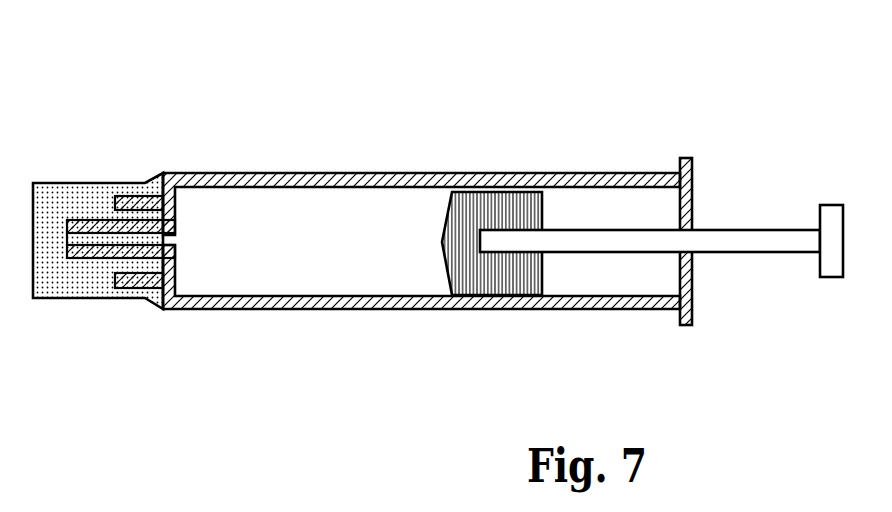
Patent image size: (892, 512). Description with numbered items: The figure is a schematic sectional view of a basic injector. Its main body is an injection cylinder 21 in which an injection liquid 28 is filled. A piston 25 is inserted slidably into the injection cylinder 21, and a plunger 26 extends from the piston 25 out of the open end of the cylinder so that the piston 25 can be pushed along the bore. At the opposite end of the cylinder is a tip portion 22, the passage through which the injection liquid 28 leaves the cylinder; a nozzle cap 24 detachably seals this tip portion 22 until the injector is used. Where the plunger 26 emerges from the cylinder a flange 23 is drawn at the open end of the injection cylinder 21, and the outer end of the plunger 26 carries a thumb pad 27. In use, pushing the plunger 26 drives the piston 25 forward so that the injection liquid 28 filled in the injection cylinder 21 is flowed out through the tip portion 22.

The injection cylinder 21 is at (365, 173).
The tip portion 22 is at (67, 223).
The flange 23 is at (683, 158).
The nozzle cap 24 is at (97, 197).
The piston 25 is at (467, 273).
The plunger 26 is at (707, 253).
The thumb pad 27 is at (830, 205).
The injection liquid 28 is at (303, 277).